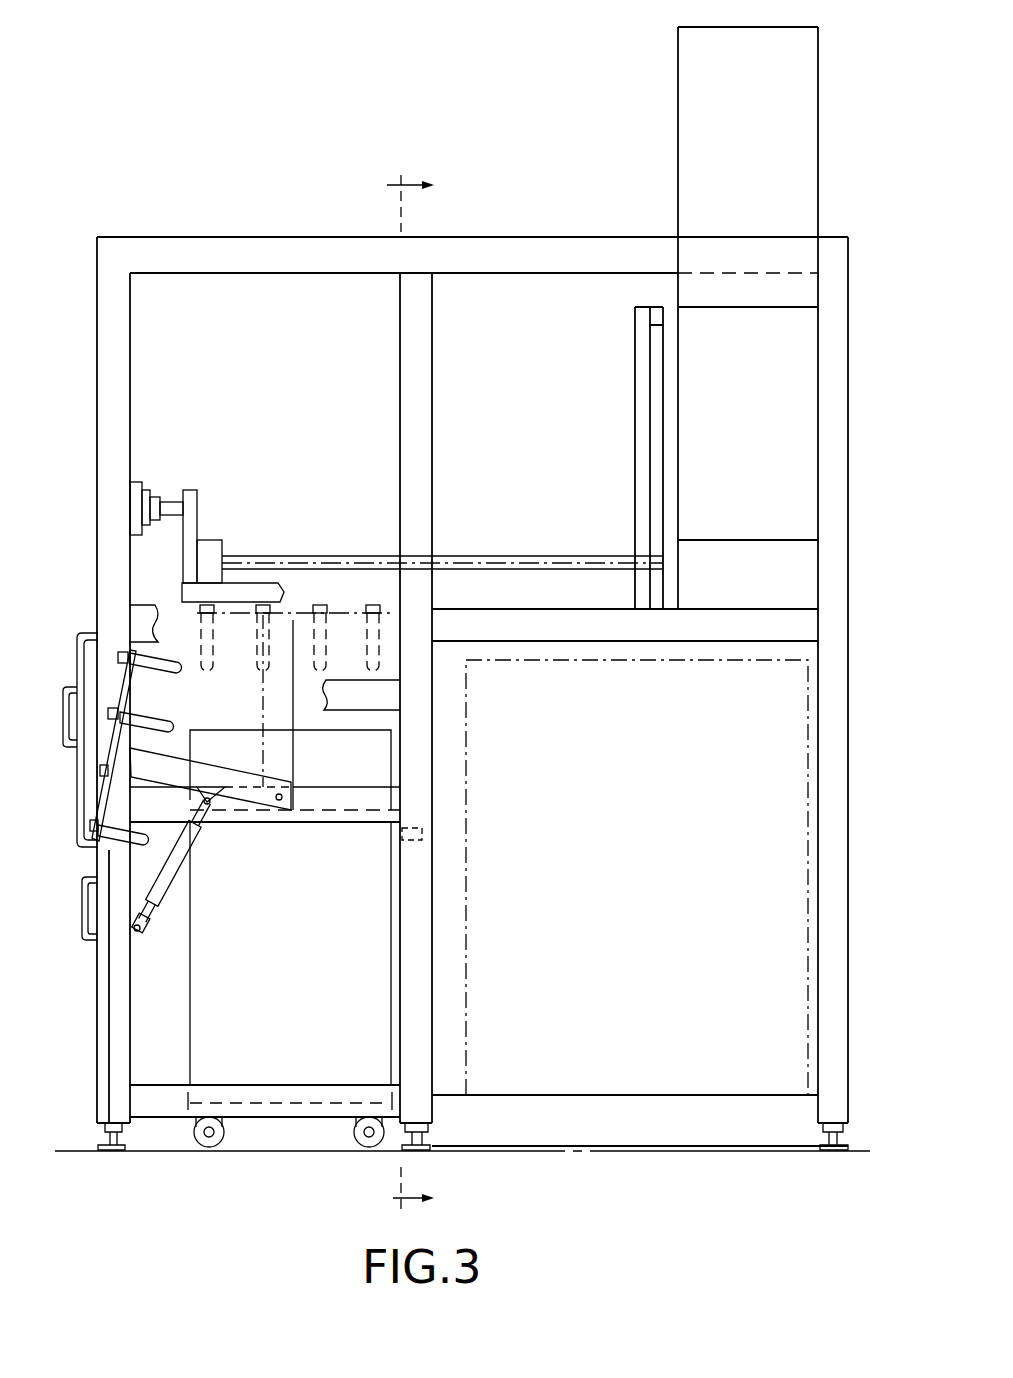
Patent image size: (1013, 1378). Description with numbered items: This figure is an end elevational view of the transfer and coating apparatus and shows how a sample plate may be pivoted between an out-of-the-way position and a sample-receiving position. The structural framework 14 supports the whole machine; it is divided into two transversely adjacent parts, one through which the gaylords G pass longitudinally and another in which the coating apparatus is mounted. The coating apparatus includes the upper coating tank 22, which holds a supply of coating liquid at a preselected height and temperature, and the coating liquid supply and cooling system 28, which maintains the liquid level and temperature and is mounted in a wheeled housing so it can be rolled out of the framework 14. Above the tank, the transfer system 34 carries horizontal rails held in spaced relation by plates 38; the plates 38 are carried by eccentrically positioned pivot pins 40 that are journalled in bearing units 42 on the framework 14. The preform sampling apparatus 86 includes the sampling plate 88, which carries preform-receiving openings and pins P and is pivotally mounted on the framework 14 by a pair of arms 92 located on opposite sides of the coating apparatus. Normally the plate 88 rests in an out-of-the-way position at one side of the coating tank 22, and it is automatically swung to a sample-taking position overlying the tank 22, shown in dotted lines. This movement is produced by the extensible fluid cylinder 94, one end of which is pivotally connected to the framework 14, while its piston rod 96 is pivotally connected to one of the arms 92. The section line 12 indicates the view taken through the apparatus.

The section line 12- 12 is at (430, 696).
The structural framework 14 is at (828, 945).
The coating tank 22 is at (362, 773).
The coating liquid supply and cooling system 28 is at (296, 1025).
The transfer system 34 is at (491, 552).
The plate 38 is at (199, 520).
The pivot pin 40 is at (175, 501).
The bearing unit 42 is at (141, 482).
The preform sampling apparatus 86 is at (203, 853).
The sampling plate 88 is at (362, 611).
The arm 92 is at (247, 788).
The extensible fluid cylinder 94 is at (158, 905).
The piston rod 96 is at (212, 820).
The gaylord G is at (808, 736).
The pins P is at (214, 650).